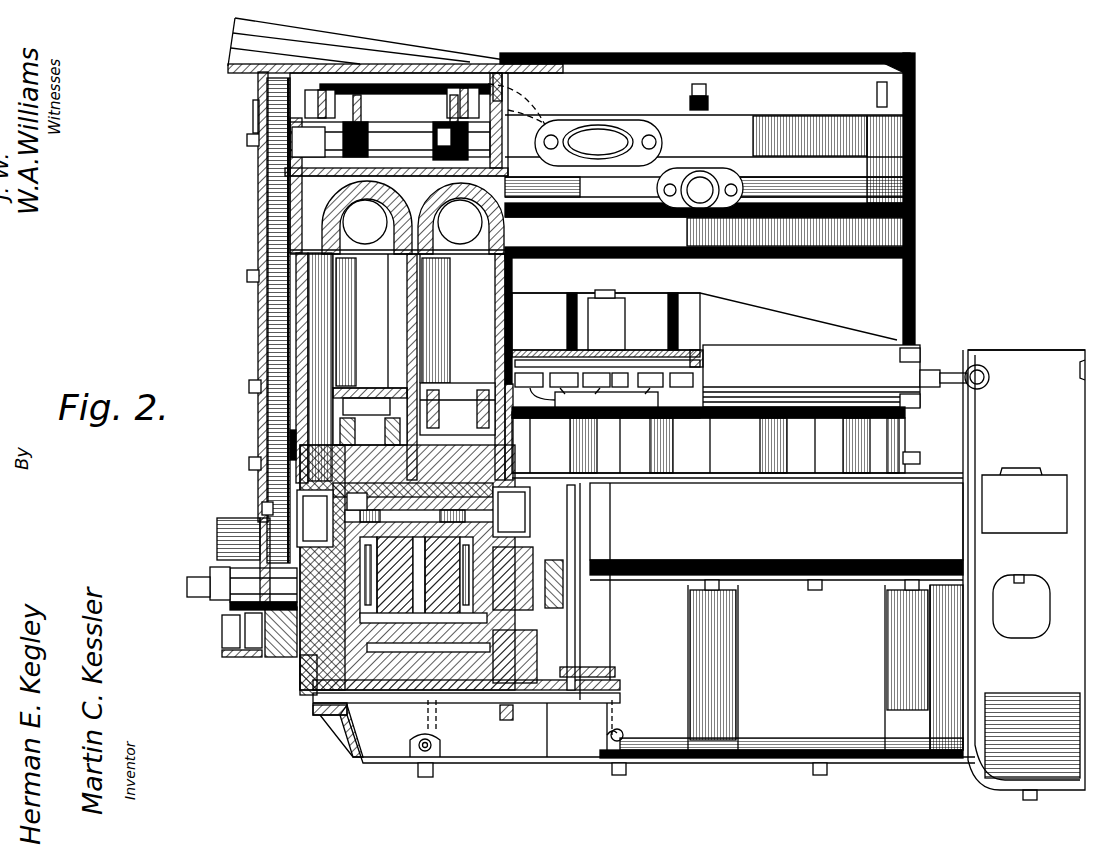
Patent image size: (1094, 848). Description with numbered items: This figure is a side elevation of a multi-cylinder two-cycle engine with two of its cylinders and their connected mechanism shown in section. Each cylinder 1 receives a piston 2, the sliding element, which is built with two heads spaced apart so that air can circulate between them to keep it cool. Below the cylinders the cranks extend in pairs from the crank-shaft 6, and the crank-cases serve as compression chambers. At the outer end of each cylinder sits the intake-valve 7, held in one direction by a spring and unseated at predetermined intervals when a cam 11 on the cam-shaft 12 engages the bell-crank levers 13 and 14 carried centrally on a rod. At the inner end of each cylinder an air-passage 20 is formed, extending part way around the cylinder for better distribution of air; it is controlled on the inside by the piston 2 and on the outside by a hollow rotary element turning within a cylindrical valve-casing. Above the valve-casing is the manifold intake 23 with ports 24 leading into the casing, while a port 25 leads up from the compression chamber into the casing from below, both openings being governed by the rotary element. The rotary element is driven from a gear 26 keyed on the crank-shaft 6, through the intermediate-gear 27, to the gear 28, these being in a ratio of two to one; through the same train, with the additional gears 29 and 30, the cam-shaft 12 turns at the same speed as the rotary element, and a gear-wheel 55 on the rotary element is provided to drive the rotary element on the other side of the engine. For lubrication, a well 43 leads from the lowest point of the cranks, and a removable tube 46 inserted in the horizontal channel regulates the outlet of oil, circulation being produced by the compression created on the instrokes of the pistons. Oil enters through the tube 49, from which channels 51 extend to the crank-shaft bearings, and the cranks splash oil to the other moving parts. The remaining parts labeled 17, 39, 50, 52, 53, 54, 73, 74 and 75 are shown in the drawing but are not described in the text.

The cylinder 1 is at (306, 343).
The piston 2 is at (385, 386).
The crank-shaft 6 is at (242, 584).
The intake-valve 7 is at (416, 577).
The cam 11 is at (308, 142).
The cam-shaft 12 is at (390, 138).
The bell-crank lever 13 is at (512, 108).
The bell-crank lever 14 is at (407, 107).
The bracket 17 is at (508, 290).
The air-passage 20 is at (690, 356).
The manifold intake 23 is at (612, 306).
The port 24 is at (545, 340).
The port 25 is at (632, 402).
The gear 26 is at (258, 657).
The intermediate-gear 27 is at (262, 507).
The gear 28 is at (262, 443).
The gear 29 is at (272, 305).
The gear 30 is at (262, 182).
The shaft 39 is at (936, 370).
The well 43 is at (438, 718).
The removable tube 46 is at (424, 752).
The tube 49 is at (347, 730).
The bottom plate 50 is at (322, 704).
The channel 51 is at (313, 672).
The bearing box 52 is at (315, 518).
The rod 53 is at (530, 562).
The shaft 54 is at (427, 663).
The gear-wheel 55 is at (530, 575).
The valve guide 73 is at (515, 110).
The valve 74 is at (392, 103).
The cover 75 is at (478, 87).